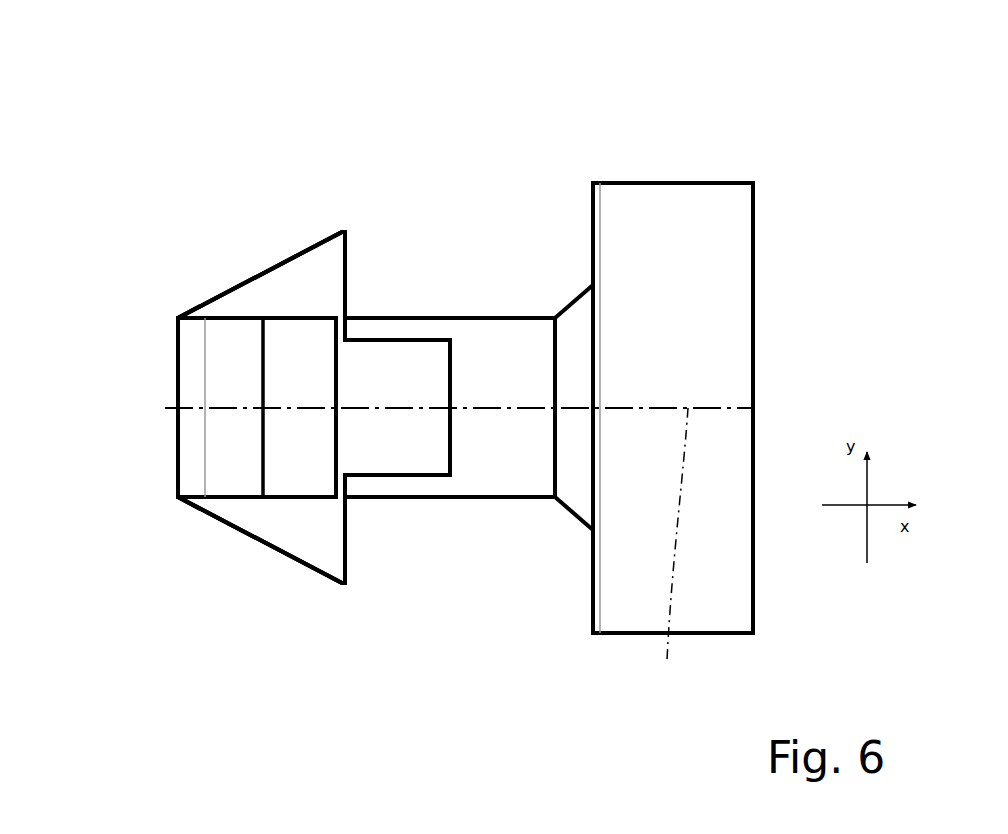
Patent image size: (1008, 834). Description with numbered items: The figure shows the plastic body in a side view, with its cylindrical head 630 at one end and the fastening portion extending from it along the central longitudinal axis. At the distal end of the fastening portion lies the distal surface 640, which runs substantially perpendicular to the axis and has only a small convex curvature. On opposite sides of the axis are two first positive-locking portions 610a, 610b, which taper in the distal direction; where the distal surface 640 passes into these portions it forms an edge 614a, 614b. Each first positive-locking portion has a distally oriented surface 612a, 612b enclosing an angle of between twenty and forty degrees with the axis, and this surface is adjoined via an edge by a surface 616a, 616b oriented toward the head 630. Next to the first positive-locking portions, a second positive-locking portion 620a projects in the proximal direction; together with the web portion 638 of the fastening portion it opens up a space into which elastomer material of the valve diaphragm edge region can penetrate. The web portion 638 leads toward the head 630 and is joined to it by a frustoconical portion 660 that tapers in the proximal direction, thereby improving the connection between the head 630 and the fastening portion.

The first positive-locking portion 610a is at (290, 532).
The first positive-locking portion 610b is at (307, 277).
The surface of the first positive-locking portion 612a is at (228, 531).
The surface of the first positive-locking portion 612b is at (255, 271).
The edge 614a is at (170, 500).
The edge 614b is at (172, 319).
The surface oriented toward the head 616a is at (354, 552).
The surface oriented toward the head 616b is at (352, 253).
The second positive-locking portion 620a is at (220, 445).
The head 630 is at (675, 198).
The web portion 638 is at (530, 453).
The distal surface 640 is at (165, 395).
The frustoconical portion 660 is at (577, 317).